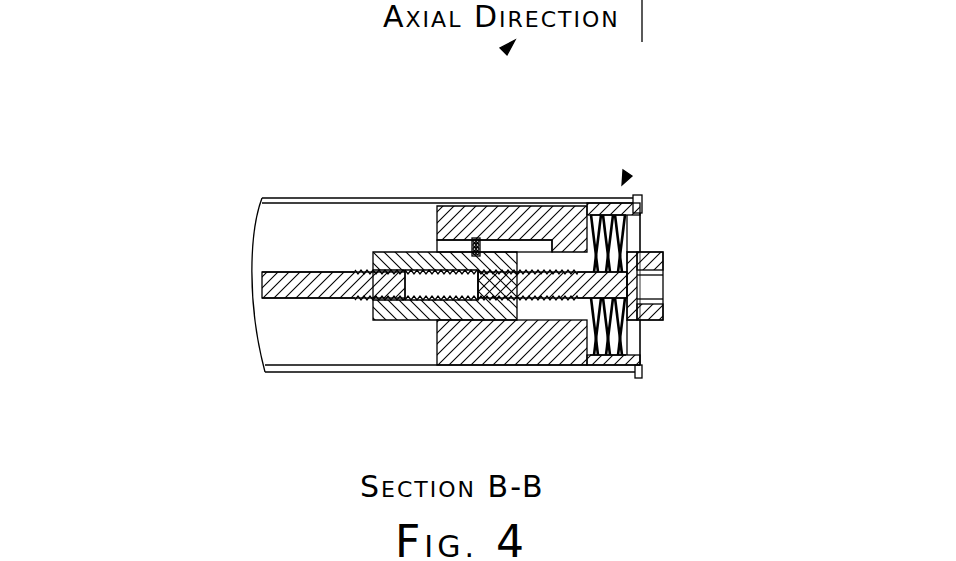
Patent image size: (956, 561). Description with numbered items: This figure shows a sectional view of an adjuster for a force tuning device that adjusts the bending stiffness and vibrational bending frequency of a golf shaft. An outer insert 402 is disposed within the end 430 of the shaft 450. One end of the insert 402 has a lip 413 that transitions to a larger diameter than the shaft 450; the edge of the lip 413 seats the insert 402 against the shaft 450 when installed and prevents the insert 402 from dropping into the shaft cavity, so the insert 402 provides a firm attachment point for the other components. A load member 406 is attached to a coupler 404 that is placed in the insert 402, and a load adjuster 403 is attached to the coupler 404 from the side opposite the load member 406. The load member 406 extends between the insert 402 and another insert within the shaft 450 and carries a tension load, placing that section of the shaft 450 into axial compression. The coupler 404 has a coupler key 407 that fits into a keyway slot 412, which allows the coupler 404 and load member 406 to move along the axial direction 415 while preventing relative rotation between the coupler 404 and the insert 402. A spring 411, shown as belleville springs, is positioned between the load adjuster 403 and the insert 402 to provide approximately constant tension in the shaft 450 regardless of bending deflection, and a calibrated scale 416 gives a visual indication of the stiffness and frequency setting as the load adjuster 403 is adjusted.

The axial direction 415 is at (460, 67).
The shaft 450 is at (446, 320).
The load member 406 is at (333, 222).
The coupler 404 is at (445, 360).
The load adjuster 403 is at (641, 286).
The outer insert 402 is at (524, 314).
The keyway slot 412 is at (503, 176).
The coupler key 407 is at (523, 201).
The lip 413 is at (695, 303).
The calibrated scale 416 is at (681, 243).
The spring 411 is at (693, 330).
The end 430 is at (677, 243).